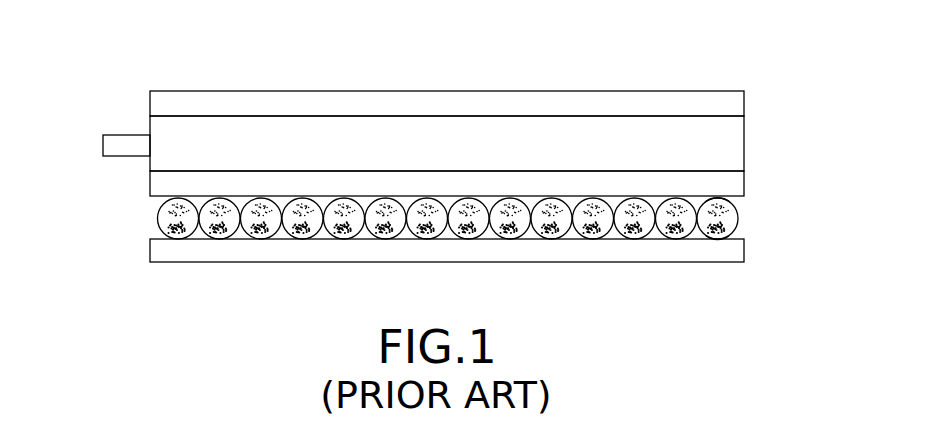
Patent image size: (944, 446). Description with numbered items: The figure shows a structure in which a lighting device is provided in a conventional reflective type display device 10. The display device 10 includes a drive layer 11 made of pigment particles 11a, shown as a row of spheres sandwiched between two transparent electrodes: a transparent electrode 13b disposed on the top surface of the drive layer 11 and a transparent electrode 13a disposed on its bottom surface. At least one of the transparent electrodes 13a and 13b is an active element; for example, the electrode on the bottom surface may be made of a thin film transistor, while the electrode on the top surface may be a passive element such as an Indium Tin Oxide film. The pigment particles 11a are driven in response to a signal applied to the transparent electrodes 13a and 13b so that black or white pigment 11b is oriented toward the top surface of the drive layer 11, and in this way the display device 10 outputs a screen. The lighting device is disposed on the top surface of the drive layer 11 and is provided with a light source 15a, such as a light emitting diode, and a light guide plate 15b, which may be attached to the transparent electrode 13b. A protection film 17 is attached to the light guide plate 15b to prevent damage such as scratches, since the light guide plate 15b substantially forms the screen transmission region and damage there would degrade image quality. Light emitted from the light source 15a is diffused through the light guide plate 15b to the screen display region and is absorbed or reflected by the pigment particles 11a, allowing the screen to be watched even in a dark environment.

The reflective type display device 10 is at (592, 72).
The drive layer 11 is at (491, 250).
The pigment particles 11a is at (738, 213).
The black or white pigment 11b is at (720, 198).
The transparent electrode 13a is at (158, 250).
The transparent electrode 13b is at (157, 183).
The light source 15a is at (103, 141).
The light guide plate 15b is at (735, 143).
The protection film 17 is at (158, 104).